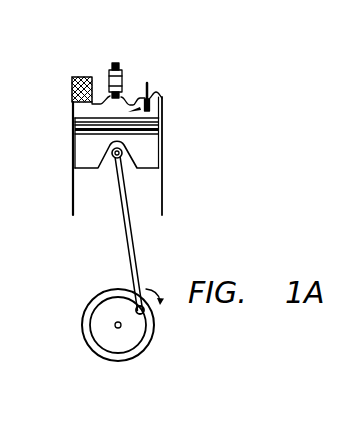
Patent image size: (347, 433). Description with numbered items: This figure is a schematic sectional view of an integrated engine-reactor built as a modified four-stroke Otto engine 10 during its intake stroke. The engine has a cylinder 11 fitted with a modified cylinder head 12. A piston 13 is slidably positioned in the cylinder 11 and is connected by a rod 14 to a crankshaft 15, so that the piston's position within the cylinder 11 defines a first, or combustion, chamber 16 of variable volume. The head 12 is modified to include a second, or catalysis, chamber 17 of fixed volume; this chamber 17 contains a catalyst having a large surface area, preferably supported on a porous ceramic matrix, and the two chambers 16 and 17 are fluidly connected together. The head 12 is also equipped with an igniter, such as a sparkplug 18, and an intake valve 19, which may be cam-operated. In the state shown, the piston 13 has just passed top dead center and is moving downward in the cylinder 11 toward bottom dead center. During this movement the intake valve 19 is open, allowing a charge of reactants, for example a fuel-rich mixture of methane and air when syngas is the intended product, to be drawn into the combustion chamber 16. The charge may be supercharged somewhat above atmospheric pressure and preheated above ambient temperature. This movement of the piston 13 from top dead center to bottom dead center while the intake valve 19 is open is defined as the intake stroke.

The four-stroke Otto engine 10 is at (205, 142).
The cylinder 11 is at (163, 190).
The cylinder head 12 is at (163, 100).
The piston 13 is at (75, 157).
The rod 14 is at (135, 252).
The crankshaft 15 is at (147, 345).
The combustion chamber 16 is at (75, 116).
The catalysis chamber 17 is at (78, 77).
The sparkplug 18 is at (120, 64).
The intake valve 19 is at (152, 82).